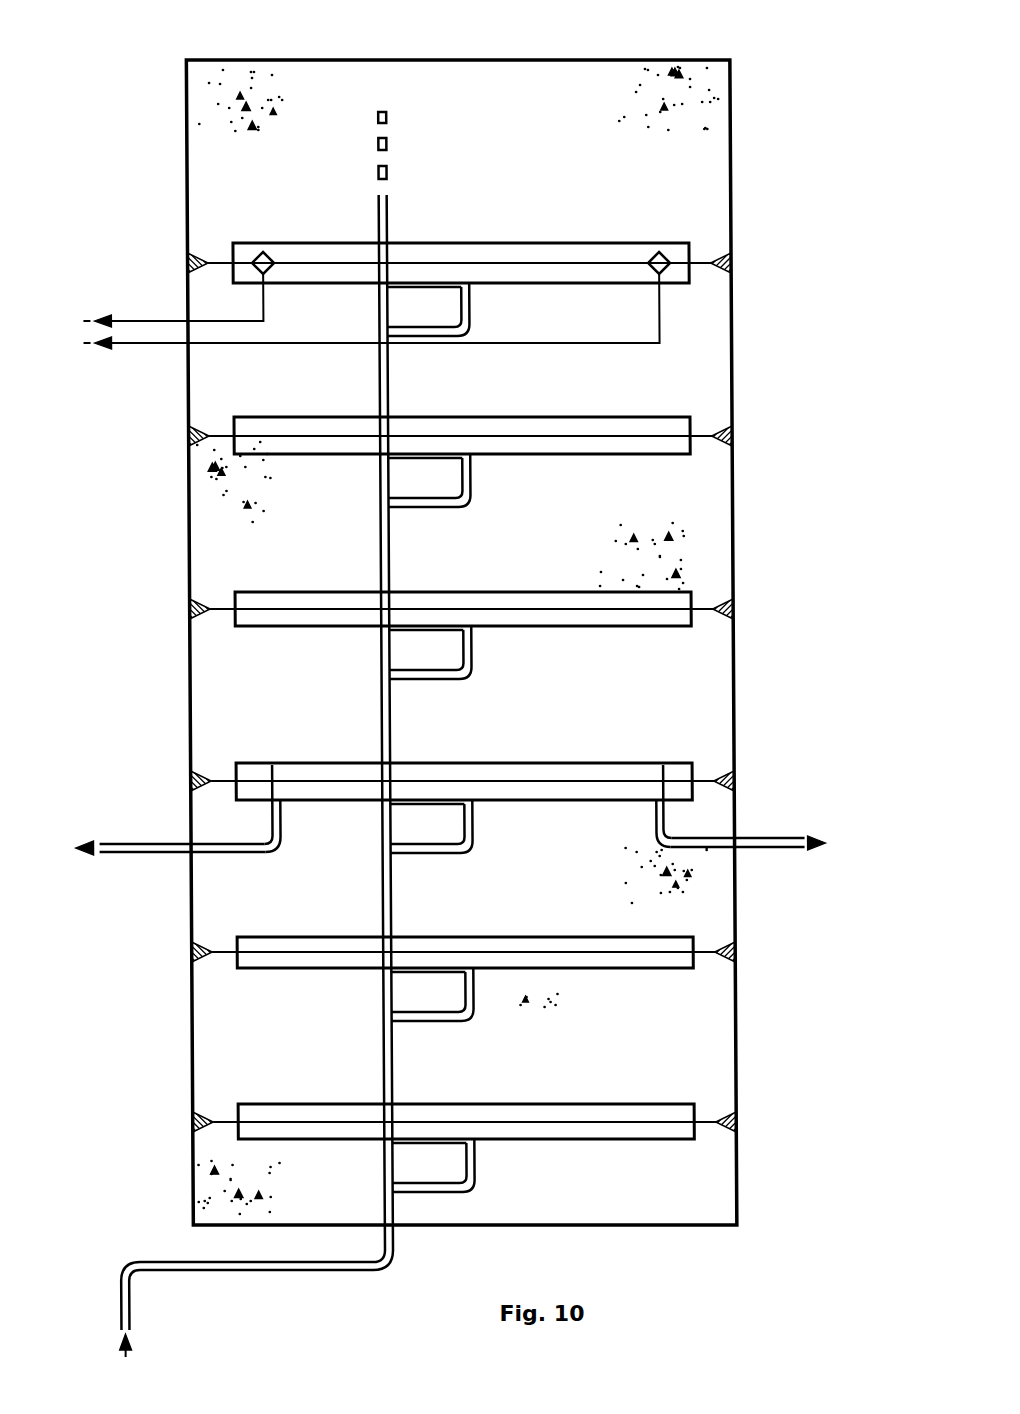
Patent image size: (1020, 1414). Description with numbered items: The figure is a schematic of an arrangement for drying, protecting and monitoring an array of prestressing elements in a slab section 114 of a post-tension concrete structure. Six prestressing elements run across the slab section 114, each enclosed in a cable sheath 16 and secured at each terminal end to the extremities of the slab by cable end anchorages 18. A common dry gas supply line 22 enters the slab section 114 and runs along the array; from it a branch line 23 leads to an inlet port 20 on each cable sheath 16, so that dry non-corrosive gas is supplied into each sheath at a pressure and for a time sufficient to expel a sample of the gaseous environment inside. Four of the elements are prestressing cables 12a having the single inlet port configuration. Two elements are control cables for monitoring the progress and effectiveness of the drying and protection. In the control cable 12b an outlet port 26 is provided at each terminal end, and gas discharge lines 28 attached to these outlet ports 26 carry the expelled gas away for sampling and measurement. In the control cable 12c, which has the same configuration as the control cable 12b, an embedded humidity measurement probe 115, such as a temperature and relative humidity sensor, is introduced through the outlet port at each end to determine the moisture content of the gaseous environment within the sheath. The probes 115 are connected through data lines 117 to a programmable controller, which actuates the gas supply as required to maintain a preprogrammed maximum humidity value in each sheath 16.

The slab section 114 is at (559, 80).
The cable sheath 16 is at (338, 243).
The prestressing cable 12a is at (600, 437).
The control cable 12b is at (577, 783).
The control cable 12c is at (582, 266).
The cable end anchorage 18 is at (187, 264).
The inlet port 20 is at (466, 278).
The branch line 23 is at (424, 338).
The supply line 22 is at (232, 1272).
The moisture content measurement probe 115 is at (262, 251).
The data line 117 is at (145, 344).
The outlet port 26 is at (269, 763).
The gas discharge line 28 is at (145, 843).